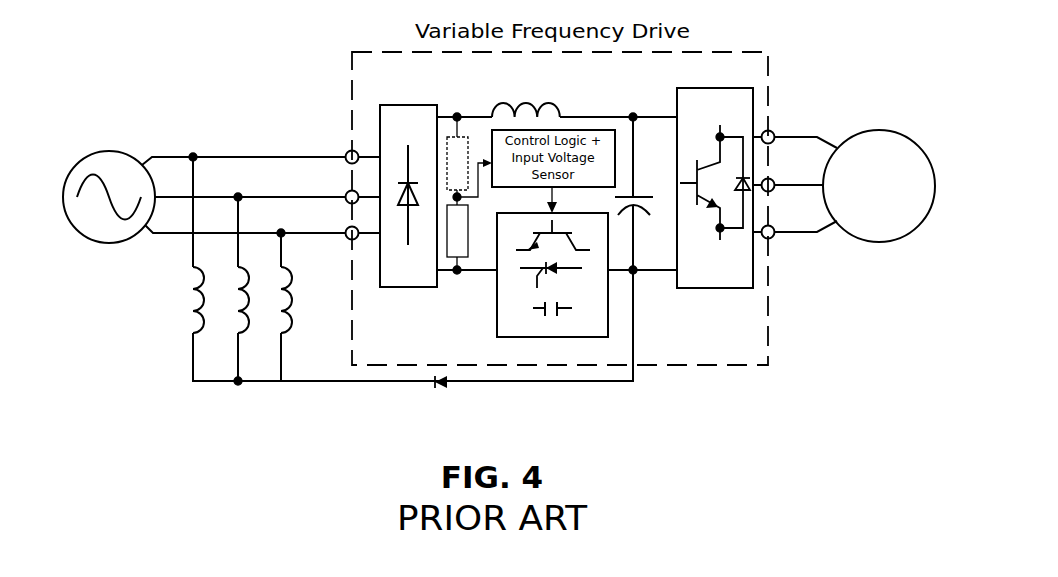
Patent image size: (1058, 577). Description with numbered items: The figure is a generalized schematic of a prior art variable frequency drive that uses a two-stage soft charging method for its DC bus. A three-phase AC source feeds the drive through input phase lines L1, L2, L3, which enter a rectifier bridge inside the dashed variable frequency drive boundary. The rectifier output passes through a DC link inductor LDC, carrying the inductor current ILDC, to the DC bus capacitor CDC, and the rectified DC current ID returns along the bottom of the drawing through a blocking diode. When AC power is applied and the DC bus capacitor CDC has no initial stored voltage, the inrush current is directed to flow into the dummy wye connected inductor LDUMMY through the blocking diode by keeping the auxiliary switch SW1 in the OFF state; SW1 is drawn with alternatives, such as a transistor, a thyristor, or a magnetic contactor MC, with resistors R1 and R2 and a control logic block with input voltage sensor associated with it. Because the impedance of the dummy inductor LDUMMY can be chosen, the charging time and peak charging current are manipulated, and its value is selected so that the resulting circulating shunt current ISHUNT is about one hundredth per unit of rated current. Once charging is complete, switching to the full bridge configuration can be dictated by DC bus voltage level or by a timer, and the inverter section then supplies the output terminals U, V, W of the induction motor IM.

The input phase terminal L1 is at (348, 150).
The input phase terminal L2 is at (348, 188).
The input phase terminal L3 is at (348, 225).
The dummy wye connected inductor LDUMMY is at (222, 352).
The shunt current ISHUNT is at (175, 257).
The DC link inductor LDC is at (526, 95).
The DC link inductor current ILDC is at (477, 69).
The resistor R1 is at (457, 157).
The resistor R2 is at (457, 233).
The auxiliary switch SW1 is at (552, 284).
The magnetic contactor MC is at (552, 318).
The DC bus capacitor CDC is at (644, 249).
The DC current ID is at (410, 405).
The output terminal U is at (795, 129).
The output terminal V is at (788, 174).
The output terminal W is at (795, 221).
The induction motor IM is at (879, 186).